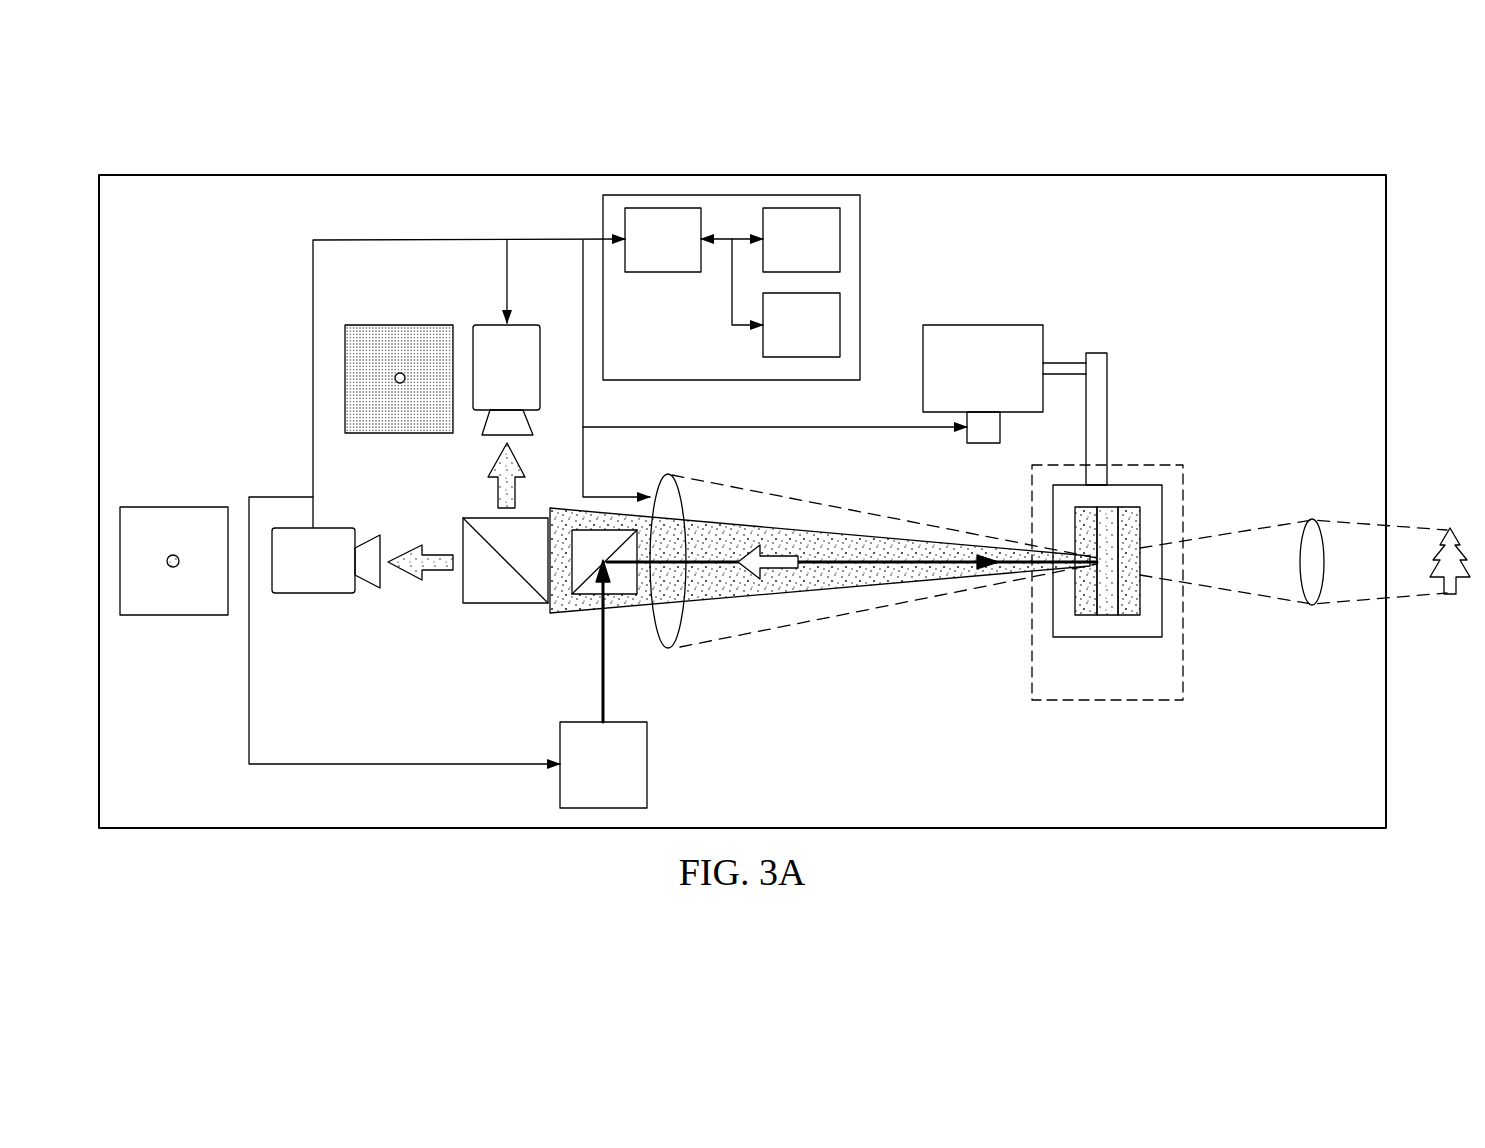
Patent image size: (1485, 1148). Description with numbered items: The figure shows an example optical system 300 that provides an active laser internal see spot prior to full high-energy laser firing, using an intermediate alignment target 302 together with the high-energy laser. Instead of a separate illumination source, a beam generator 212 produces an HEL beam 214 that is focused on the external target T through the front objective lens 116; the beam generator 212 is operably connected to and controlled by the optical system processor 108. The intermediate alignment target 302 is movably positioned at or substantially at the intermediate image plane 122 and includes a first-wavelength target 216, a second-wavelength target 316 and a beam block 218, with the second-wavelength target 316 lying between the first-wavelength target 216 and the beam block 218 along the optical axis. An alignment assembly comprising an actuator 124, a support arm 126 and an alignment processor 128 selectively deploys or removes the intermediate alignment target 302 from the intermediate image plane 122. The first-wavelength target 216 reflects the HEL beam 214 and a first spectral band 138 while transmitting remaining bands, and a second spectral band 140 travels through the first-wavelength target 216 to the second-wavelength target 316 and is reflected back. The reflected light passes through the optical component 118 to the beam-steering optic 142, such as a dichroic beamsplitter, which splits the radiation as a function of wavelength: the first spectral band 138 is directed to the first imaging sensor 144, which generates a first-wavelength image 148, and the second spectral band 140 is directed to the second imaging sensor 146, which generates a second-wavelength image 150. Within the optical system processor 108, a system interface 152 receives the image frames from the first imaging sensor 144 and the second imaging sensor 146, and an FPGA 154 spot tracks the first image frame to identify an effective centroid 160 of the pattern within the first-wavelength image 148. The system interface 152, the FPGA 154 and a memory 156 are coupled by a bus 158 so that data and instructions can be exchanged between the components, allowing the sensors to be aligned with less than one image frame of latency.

The optical system 300 is at (1024, 174).
The optical system processor 108 is at (773, 287).
The system interface 152 is at (663, 240).
The FPGA 154 is at (801, 240).
The memory 156 is at (801, 325).
The bus 158 is at (732, 290).
The actuator 124 is at (1004, 368).
The support arm 126 is at (1107, 422).
The alignment processor 128 is at (983, 444).
The intermediate image plane 122 is at (1127, 703).
The intermediate alignment target 302 is at (1105, 589).
The first-wavelength target 216 is at (1082, 608).
The second-wavelength target 316 is at (1106, 612).
The beam block 218 is at (1130, 612).
The HEL beam 214 is at (603, 672).
The beam generator 212 is at (603, 765).
The optical component 118 is at (673, 649).
The front objective lens 116 is at (1312, 607).
The target T is at (1452, 598).
The beam-steering optic 142 is at (511, 605).
The first spectral band 138 is at (440, 574).
The second spectral band 140 is at (497, 498).
The second imaging sensor 146 is at (491, 325).
The second-wavelength image 150 is at (389, 324).
The first imaging sensor 144 is at (305, 596).
The first-wavelength image 148 is at (163, 505).
The effective centroid 160 is at (173, 568).